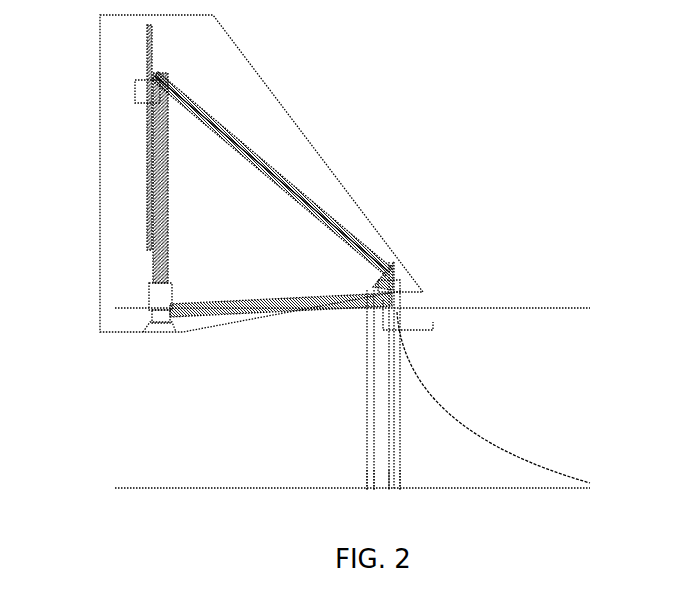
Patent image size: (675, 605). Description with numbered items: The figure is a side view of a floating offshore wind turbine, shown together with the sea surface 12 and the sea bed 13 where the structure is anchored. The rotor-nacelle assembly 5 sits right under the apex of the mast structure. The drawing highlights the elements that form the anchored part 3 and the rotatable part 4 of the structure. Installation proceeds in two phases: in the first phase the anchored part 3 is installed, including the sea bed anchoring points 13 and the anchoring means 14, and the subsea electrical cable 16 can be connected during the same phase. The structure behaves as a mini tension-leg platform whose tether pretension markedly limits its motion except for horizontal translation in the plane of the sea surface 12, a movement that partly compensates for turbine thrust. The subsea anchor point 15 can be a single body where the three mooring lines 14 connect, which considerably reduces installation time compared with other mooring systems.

The anchored part 3 is at (425, 320).
The rotatable part 4 is at (352, 193).
The rotor-nacelle assembly 5 is at (135, 93).
The sea surface 12 is at (484, 307).
The sea bed 13 is at (363, 490).
The anchoring means 14 is at (373, 372).
The subsea anchor point 15 is at (381, 483).
The subsea electrical cable 16 is at (484, 434).